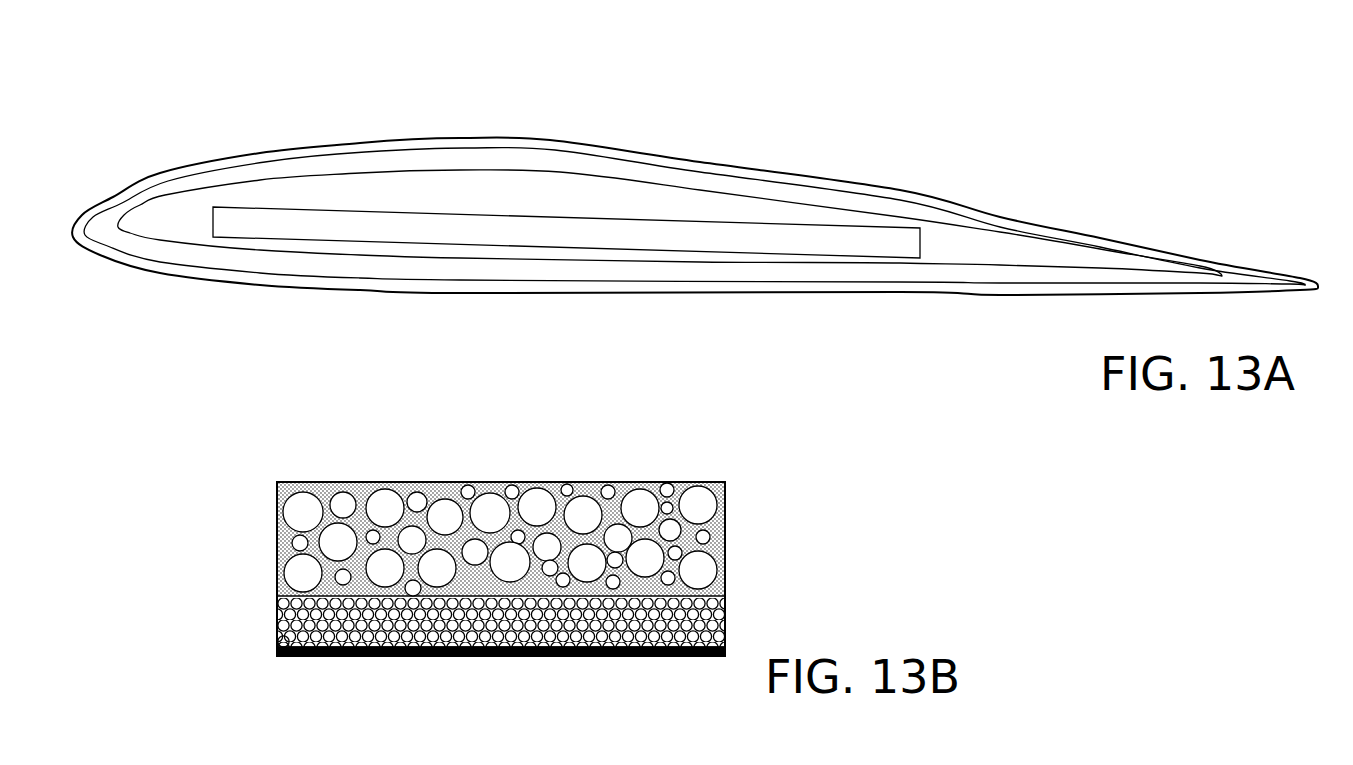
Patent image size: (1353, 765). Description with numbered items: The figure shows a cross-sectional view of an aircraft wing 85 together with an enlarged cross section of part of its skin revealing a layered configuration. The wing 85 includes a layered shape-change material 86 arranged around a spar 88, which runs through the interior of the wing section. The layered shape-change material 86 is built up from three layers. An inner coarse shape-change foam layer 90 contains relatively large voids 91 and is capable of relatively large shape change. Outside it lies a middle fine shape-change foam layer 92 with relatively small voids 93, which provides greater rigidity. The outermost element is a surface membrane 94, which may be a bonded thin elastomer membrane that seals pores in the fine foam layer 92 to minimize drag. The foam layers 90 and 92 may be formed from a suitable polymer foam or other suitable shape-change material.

In FIG. 13A, the aircraft wing 85 is at (157, 115).
In FIG. 13A, the layered shape-change material 86 is at (323, 132).
In FIG. 13B, the layered shape-change material 86 is at (257, 550).
In FIG. 13A, the spar 88 is at (430, 225).
In FIG. 13B, the inner coarse shape-change foam layer 90 is at (283, 531).
In FIG. 13B, the large voids 91 is at (303, 500).
In FIG. 13B, the middle fine shape-change foam layer 92 is at (267, 620).
In FIG. 13B, the small voids 93 is at (273, 645).
In FIG. 13B, the surface membrane 94 is at (342, 657).